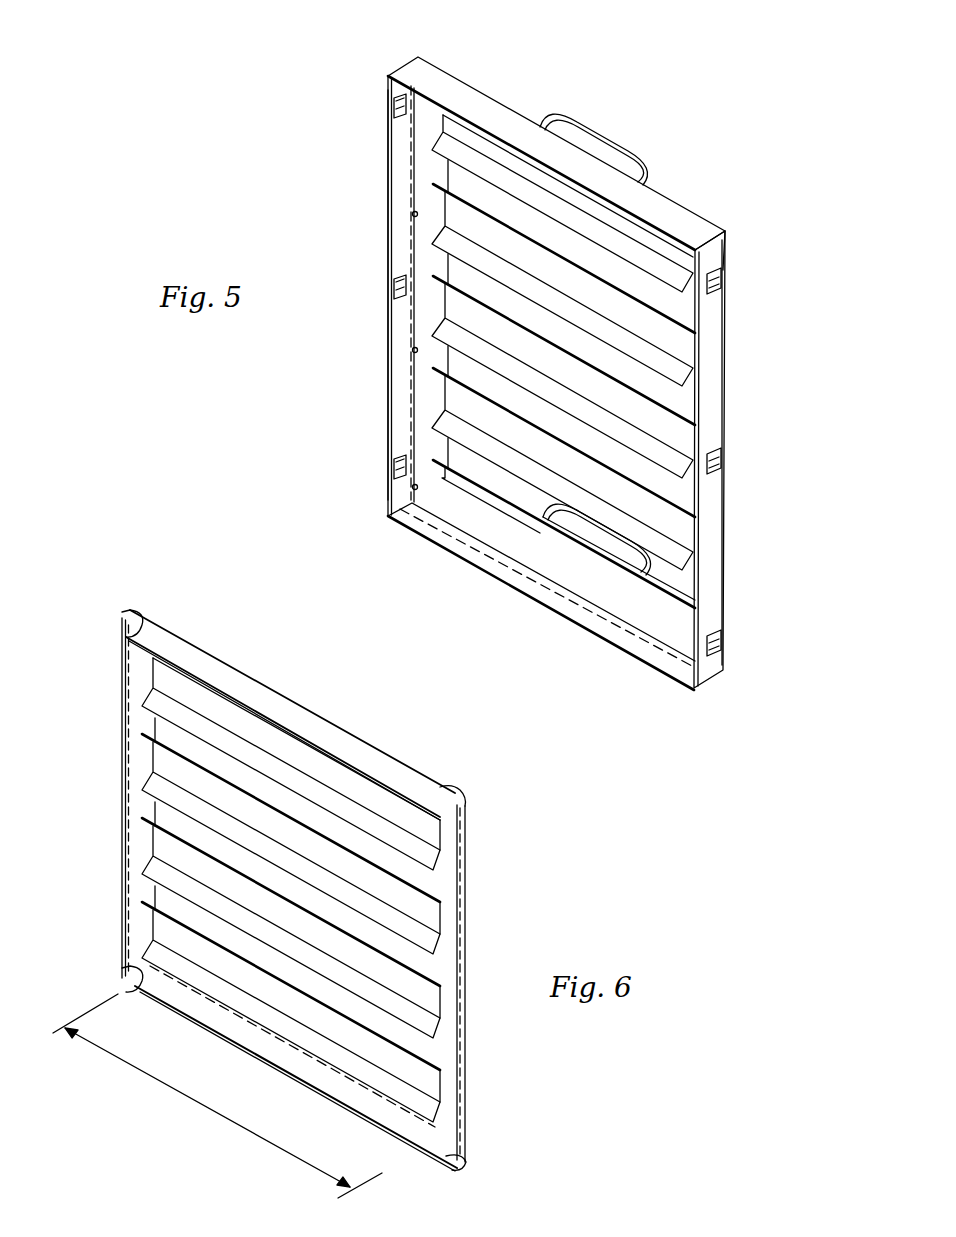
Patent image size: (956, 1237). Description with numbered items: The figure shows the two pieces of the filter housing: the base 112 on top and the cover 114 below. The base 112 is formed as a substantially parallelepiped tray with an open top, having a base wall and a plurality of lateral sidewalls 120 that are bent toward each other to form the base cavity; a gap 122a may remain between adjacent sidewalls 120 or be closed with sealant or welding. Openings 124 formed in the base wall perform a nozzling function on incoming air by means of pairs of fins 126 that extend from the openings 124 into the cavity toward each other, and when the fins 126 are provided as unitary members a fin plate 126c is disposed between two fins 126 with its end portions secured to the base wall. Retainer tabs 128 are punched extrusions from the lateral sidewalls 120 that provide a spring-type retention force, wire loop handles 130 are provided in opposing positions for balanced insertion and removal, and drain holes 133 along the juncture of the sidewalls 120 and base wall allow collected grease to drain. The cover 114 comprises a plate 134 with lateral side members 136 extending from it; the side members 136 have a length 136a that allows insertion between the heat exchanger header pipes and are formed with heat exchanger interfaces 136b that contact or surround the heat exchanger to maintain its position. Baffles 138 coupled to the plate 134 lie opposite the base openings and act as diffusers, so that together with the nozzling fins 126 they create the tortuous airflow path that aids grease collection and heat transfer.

In FIG. 5, the base 112 is at (692, 110).
In FIG. 6, the cover 114 is at (313, 693).
In FIG. 5, the lateral sidewall 120 is at (393, 150).
In FIG. 5, the gap 122a is at (730, 245).
In FIG. 5, the opening 124 is at (676, 305).
In FIG. 5, the fin 126 is at (658, 263).
In FIG. 5, the fin plate 126c is at (468, 318).
In FIG. 5, the retainer tab 128 is at (394, 103).
In FIG. 5, the handle 130 is at (600, 122).
In FIG. 5, the drain hole 133 is at (412, 214).
In FIG. 6, the plate 134 is at (460, 878).
In FIG. 6, the lateral side member 136 is at (205, 665).
In FIG. 6, the length 136a is at (205, 1107).
In FIG. 6, the heat exchanger interface 136b is at (125, 618).
In FIG. 6, the baffle 138 is at (437, 836).